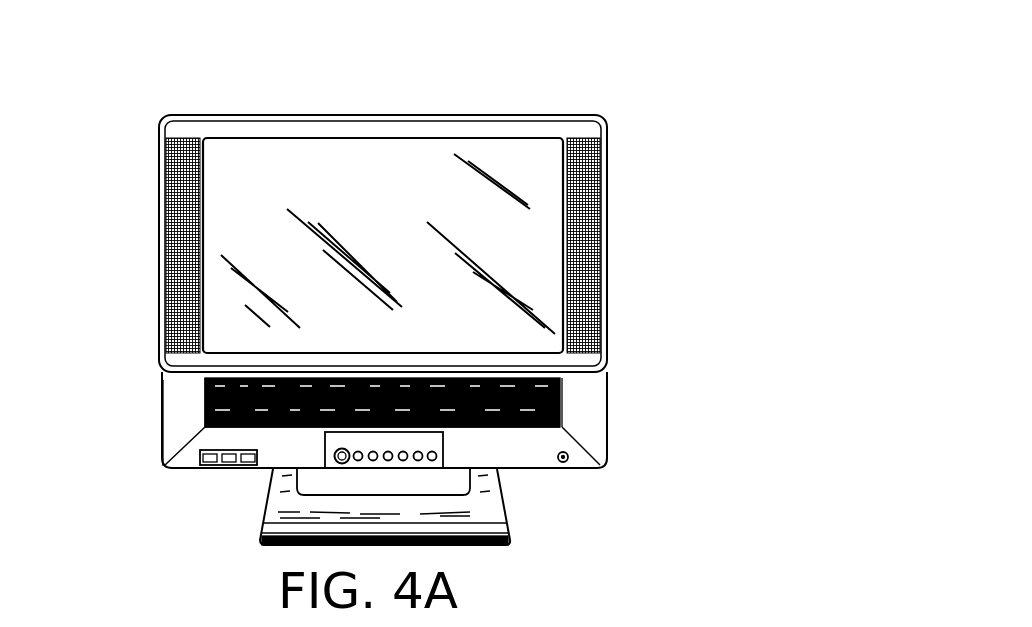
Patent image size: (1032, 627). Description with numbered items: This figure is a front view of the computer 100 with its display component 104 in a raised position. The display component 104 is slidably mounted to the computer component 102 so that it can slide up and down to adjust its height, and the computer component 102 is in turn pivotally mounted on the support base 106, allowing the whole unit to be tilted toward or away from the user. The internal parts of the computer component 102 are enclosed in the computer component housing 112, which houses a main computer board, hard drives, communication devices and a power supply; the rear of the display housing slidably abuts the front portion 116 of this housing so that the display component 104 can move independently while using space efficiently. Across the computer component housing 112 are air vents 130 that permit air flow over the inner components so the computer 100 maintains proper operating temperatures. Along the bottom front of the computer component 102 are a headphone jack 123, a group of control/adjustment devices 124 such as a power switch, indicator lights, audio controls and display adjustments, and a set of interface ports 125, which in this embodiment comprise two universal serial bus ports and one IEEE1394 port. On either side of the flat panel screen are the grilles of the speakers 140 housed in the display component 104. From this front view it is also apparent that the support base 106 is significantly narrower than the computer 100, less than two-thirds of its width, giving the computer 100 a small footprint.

The computer 100 is at (890, 0).
The computer component 102 is at (598, 380).
The display component 104 is at (574, 126).
The support base 106 is at (505, 524).
The computer component housing 112 is at (583, 413).
The front portion 116 is at (170, 436).
The headphone jack 123 is at (570, 456).
The control/adjustment devices 124 is at (392, 450).
The interface ports 125 is at (210, 464).
The air vents 130 is at (205, 405).
The speakers 140 is at (180, 193).